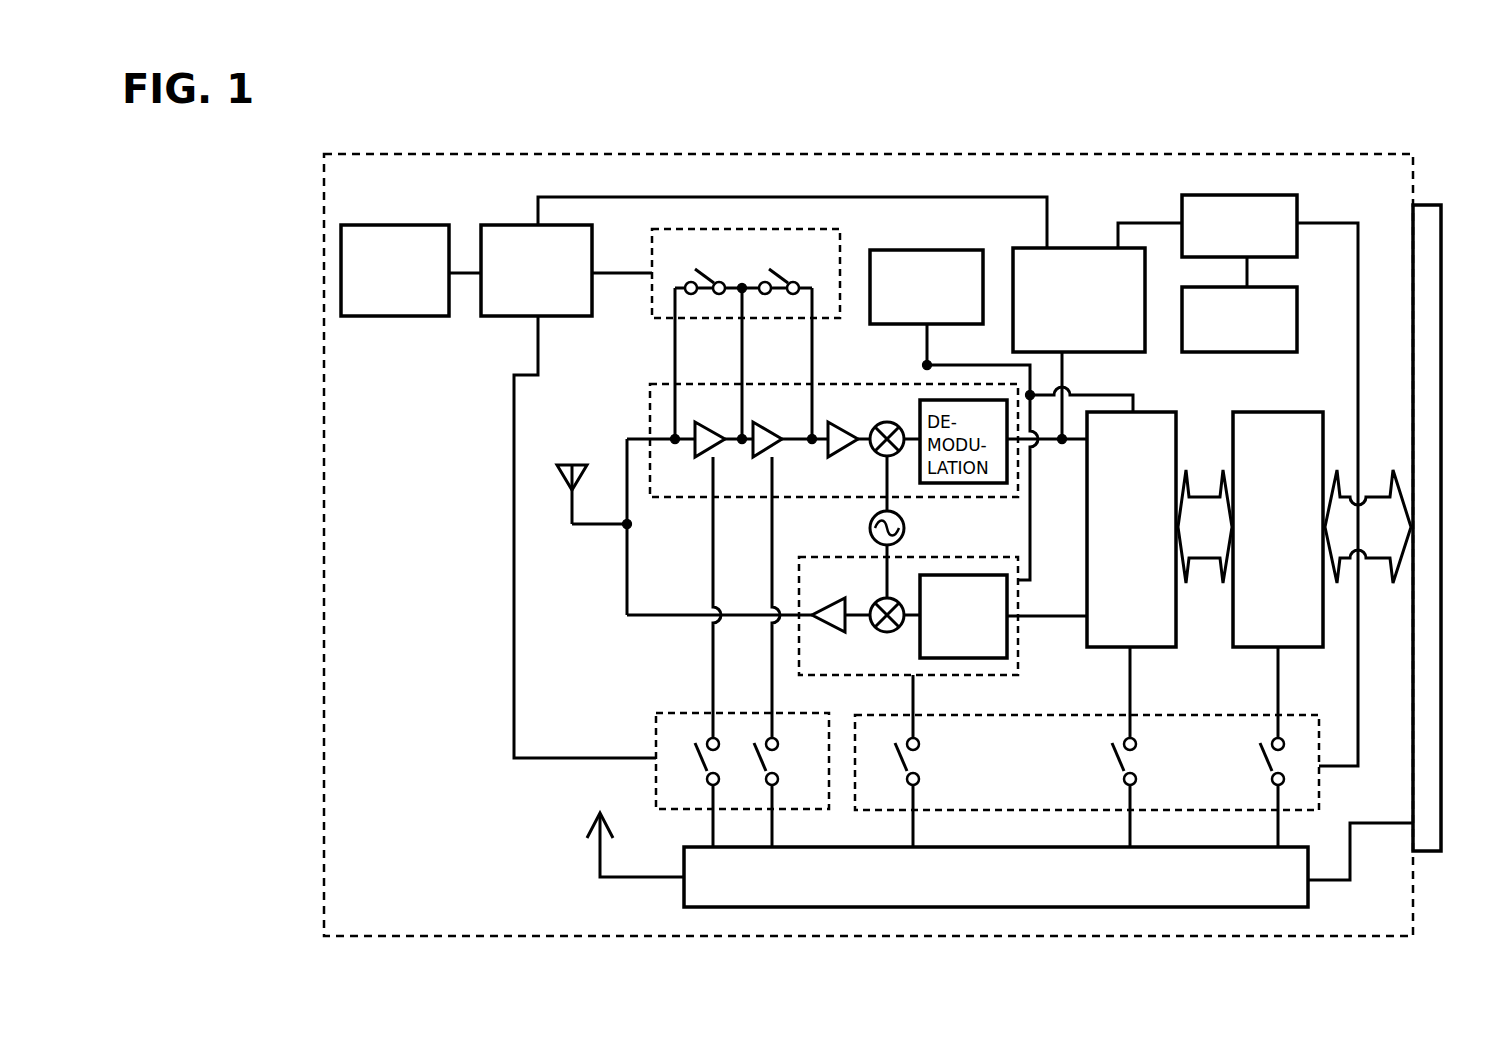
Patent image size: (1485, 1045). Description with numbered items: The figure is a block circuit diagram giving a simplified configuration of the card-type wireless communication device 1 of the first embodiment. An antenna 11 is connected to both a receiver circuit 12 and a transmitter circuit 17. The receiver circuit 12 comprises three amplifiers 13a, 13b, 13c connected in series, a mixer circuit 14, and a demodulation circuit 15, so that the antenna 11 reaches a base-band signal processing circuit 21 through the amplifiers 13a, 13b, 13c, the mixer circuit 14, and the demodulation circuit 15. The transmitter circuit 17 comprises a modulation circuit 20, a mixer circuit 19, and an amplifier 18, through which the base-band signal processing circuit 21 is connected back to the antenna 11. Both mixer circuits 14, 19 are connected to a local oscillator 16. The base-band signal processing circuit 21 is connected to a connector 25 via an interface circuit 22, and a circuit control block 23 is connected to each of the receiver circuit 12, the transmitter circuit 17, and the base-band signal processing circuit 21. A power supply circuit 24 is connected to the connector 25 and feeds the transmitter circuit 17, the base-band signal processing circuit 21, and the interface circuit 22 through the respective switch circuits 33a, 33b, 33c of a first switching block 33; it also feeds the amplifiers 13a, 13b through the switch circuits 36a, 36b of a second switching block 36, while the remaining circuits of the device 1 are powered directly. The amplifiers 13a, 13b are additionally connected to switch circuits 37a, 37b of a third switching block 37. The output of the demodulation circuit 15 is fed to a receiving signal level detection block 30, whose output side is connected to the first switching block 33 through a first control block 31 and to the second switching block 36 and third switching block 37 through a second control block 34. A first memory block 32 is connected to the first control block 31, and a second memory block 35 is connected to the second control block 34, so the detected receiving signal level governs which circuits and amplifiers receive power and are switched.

The card-type wireless communication device 1 is at (861, 152).
The antenna 11 is at (574, 463).
The receiver circuit 12 is at (822, 499).
The amplifier 13a is at (713, 424).
The amplifier 13b is at (777, 424).
The amplifier 13c is at (839, 426).
The mixer circuit 14 is at (893, 423).
The demodulation circuit 15 is at (917, 465).
The local oscillator 16 is at (910, 530).
The transmitter circuit 17 is at (857, 592).
The amplifier 18 is at (829, 597).
The mixer circuit 19 is at (874, 632).
The modulation circuit 20 is at (1008, 637).
The base-band signal processing circuit 21 is at (1098, 652).
The interface circuit 22 is at (1305, 650).
The circuit control block 23 is at (952, 250).
The power supply circuit 24 is at (1313, 895).
The connector 25 is at (1402, 752).
The receiving signal level detection block 30 is at (1085, 246).
The first control block 31 is at (1297, 235).
The first memory block 32 is at (1297, 315).
The first switching block 33 is at (1087, 747).
The switch circuit 33a is at (923, 767).
The switch circuit 33b is at (1120, 767).
The switch circuit 33c is at (1267, 767).
The second control block 34 is at (577, 318).
The second memory block 35 is at (397, 318).
The second switching block 36 is at (733, 652).
The switch circuit 36a is at (700, 766).
The switch circuit 36b is at (777, 765).
The third switching block 37 is at (721, 320).
The switch circuit 37a is at (712, 282).
The switch circuit 37b is at (784, 282).